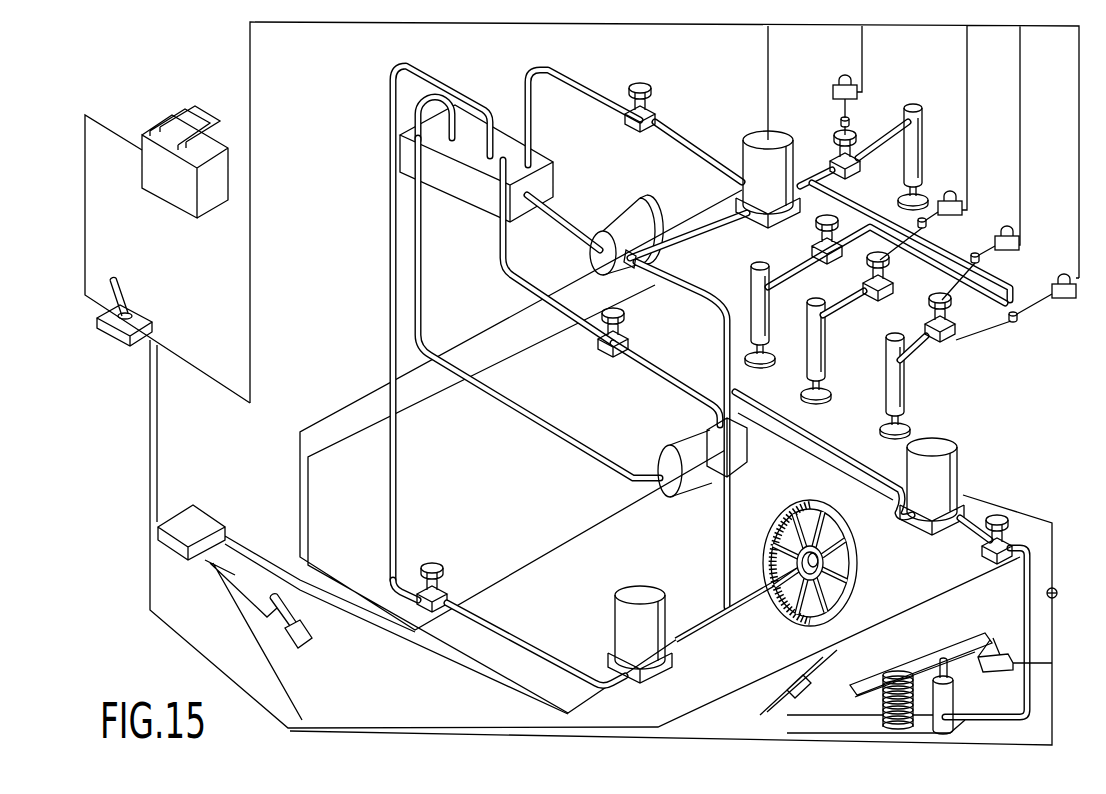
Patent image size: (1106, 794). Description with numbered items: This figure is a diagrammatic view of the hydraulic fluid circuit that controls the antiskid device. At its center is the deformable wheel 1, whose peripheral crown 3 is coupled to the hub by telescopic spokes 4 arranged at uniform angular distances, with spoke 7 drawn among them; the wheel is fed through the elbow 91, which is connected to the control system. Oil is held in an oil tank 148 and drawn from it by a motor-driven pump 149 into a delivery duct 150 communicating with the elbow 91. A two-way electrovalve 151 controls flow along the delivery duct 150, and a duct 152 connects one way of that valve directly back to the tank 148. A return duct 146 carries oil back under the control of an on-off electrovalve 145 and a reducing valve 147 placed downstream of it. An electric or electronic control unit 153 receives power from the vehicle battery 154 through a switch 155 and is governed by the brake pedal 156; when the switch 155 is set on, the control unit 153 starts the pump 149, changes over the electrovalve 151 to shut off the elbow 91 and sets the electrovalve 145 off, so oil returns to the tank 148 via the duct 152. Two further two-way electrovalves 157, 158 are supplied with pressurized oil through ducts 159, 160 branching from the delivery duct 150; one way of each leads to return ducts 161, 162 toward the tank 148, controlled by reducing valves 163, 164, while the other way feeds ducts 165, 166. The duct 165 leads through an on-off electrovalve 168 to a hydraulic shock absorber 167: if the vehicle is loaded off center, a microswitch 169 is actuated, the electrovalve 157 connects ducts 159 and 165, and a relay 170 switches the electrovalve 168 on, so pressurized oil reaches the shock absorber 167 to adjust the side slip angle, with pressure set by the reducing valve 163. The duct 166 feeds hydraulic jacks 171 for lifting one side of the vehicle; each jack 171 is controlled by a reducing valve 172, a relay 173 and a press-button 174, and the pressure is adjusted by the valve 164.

The deformable wheel 1 is at (821, 553).
The peripheral crown 3 is at (802, 505).
The telescopic spokes 4 is at (840, 567).
The spoke 7 is at (832, 545).
The elbow 91 is at (748, 607).
The on-off electrovalve 145 is at (670, 617).
The return duct 146 is at (542, 660).
The reducing valve 147 is at (452, 580).
The oil tank 148 is at (462, 212).
The motor-driven pump 149 is at (615, 232).
The delivery duct 150 is at (676, 283).
The two-way electrovalve 151 is at (748, 460).
The duct 152 is at (543, 428).
The control unit 153 is at (205, 505).
The battery 154 is at (220, 198).
The switch 155 is at (143, 308).
The brake pedal 156 is at (312, 640).
The two-way electrovalve 157 is at (960, 466).
The two-way electrovalve 158 is at (750, 172).
The duct 159 is at (843, 438).
The duct 160 is at (722, 235).
The return duct 161 is at (665, 372).
The return duct 162 is at (683, 150).
The reducing valve 163 is at (612, 357).
The reducing valve 164 is at (648, 112).
The duct 165 is at (975, 528).
The duct 166 is at (805, 170).
The hydraulic shock absorber 167 is at (957, 698).
The on-off electrovalve 168 is at (995, 555).
The microswitch 169 is at (997, 655).
The relay 170 is at (1060, 592).
The hydraulic jack 171 is at (905, 375).
The reducing valve 172 is at (950, 345).
The relay 173 is at (1018, 318).
The press-button 174 is at (1062, 280).